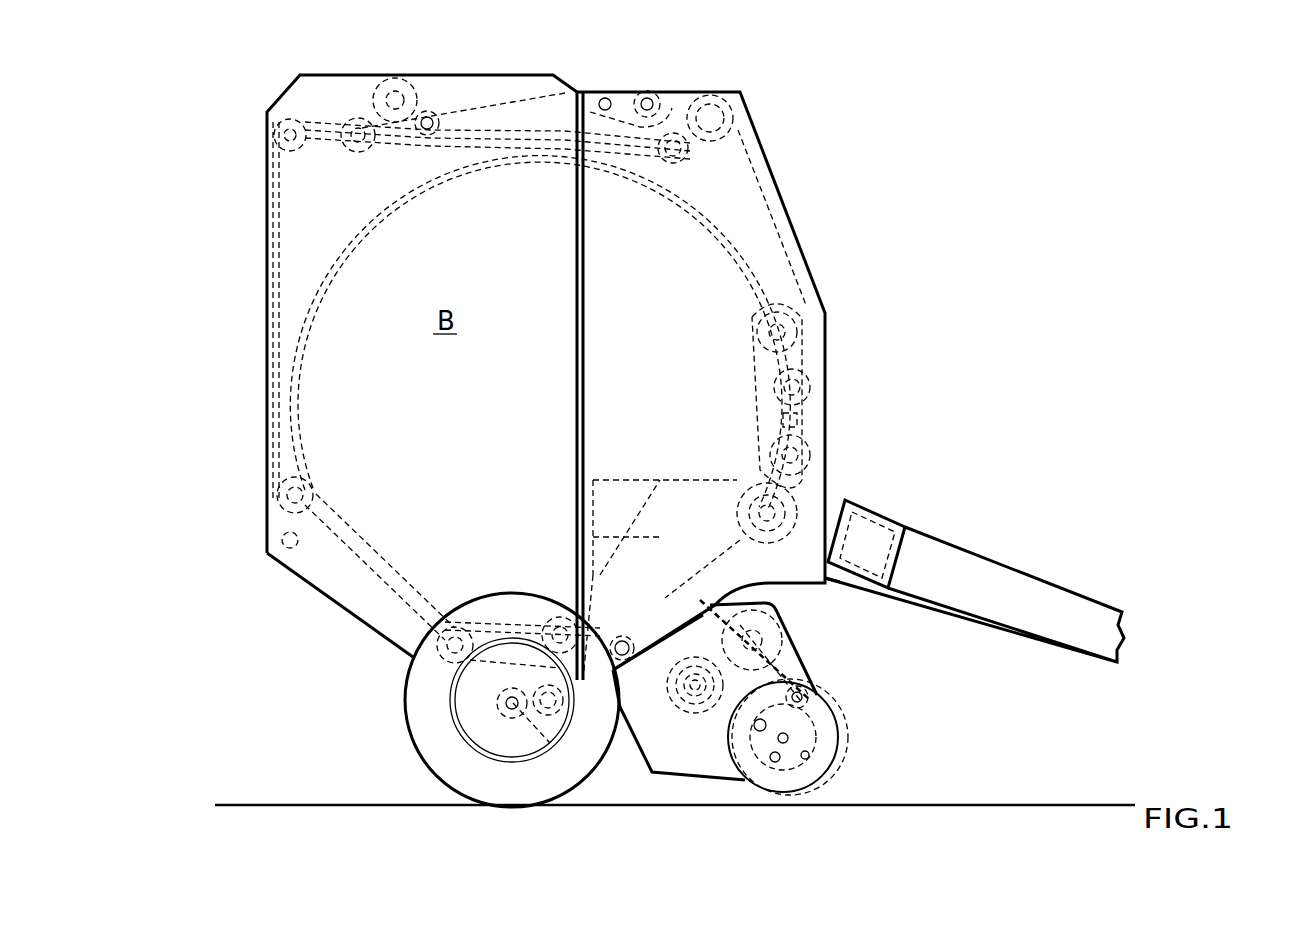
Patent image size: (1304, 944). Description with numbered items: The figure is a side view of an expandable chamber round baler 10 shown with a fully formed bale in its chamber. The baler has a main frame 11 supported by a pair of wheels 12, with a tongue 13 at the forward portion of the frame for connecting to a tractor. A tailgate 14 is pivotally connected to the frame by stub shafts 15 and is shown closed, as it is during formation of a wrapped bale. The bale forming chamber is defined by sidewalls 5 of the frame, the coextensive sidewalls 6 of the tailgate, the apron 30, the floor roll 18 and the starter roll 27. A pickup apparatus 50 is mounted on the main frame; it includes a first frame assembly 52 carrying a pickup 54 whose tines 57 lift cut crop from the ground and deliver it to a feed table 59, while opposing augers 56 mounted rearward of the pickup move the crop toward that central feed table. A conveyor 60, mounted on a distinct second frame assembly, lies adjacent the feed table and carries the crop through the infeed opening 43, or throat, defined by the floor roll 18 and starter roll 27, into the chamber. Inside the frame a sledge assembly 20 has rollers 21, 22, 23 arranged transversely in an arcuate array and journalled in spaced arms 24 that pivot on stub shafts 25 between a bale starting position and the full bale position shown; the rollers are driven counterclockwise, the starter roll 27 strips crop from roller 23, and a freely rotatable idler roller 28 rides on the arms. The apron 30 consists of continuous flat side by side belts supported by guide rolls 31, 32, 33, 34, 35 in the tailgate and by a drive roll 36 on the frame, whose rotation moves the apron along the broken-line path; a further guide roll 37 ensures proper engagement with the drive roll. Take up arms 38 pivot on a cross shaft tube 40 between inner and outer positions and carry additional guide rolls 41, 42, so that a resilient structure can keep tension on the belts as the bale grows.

The sidewalls 5 is at (717, 198).
The sidewalls 6 is at (384, 180).
The round baler 10 is at (866, 128).
The main frame 11 is at (610, 483).
The wheels 12 is at (425, 740).
The tongue 13 is at (1033, 573).
The tailgate 14 is at (280, 88).
The stub shafts 15 is at (602, 92).
The floor roll 18 is at (603, 705).
The sledge assembly 20 is at (750, 404).
The roller 21 is at (812, 382).
The roller 22 is at (812, 458).
The roller 23 is at (716, 577).
The arms 24 is at (803, 420).
The stub shafts 25 is at (753, 508).
The starter roll 27 is at (708, 566).
The idler roller 28 is at (800, 282).
The apron 30 is at (335, 246).
The guide roll 31 is at (542, 605).
The guide roll 32 is at (458, 643).
The guide roll 33 is at (312, 498).
The guide roll 34 is at (288, 156).
The guide roll 35 is at (402, 88).
The drive roll 36 is at (712, 116).
The guide roll 37 is at (672, 160).
The take up arms 38 is at (493, 102).
The cross shaft tube 40 is at (647, 98).
The guide roll 41 is at (352, 128).
The guide roll 42 is at (433, 112).
The infeed opening 43 is at (842, 522).
The pickup apparatus 50 is at (878, 684).
The first frame assembly 52 is at (677, 760).
The pickup 54 is at (842, 742).
The augers 56 is at (782, 645).
The tines 57 is at (805, 697).
The feed table 59 is at (800, 616).
The conveyor 60 is at (682, 705).